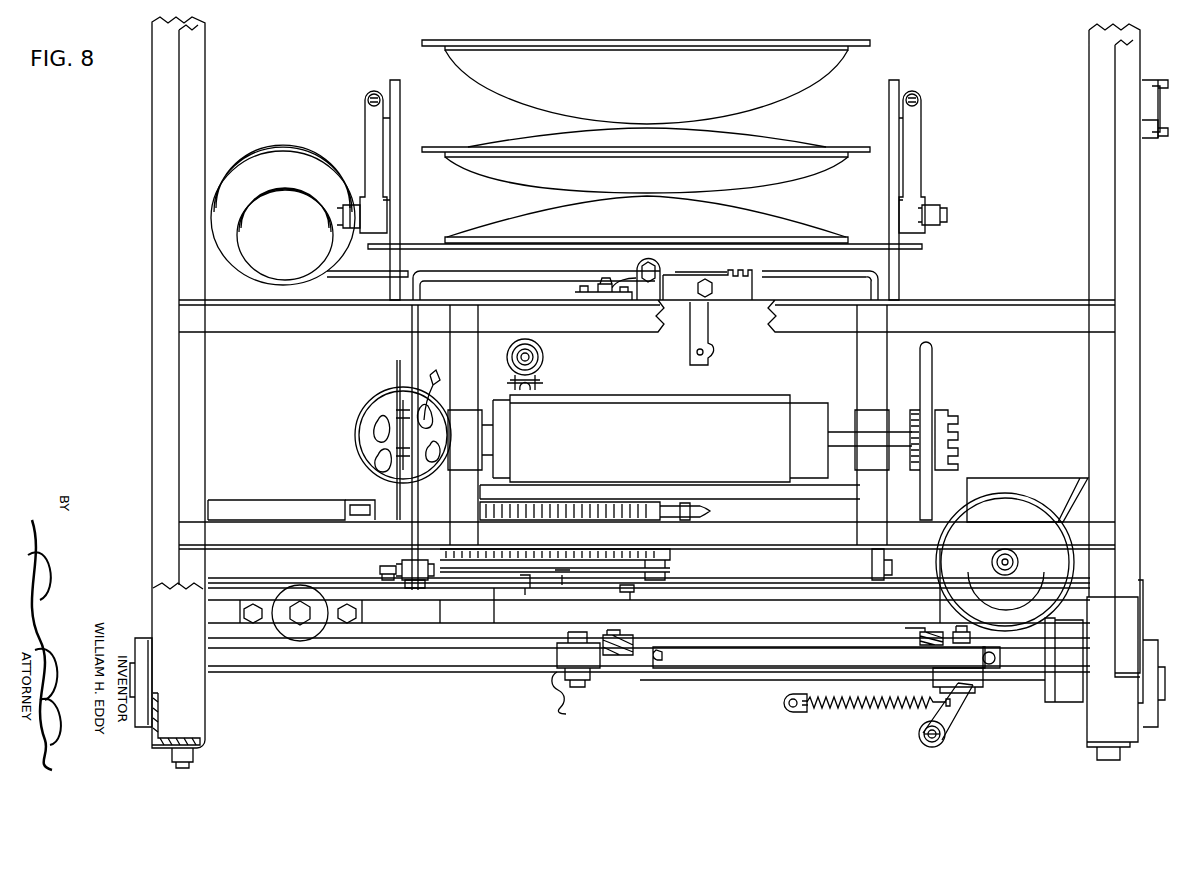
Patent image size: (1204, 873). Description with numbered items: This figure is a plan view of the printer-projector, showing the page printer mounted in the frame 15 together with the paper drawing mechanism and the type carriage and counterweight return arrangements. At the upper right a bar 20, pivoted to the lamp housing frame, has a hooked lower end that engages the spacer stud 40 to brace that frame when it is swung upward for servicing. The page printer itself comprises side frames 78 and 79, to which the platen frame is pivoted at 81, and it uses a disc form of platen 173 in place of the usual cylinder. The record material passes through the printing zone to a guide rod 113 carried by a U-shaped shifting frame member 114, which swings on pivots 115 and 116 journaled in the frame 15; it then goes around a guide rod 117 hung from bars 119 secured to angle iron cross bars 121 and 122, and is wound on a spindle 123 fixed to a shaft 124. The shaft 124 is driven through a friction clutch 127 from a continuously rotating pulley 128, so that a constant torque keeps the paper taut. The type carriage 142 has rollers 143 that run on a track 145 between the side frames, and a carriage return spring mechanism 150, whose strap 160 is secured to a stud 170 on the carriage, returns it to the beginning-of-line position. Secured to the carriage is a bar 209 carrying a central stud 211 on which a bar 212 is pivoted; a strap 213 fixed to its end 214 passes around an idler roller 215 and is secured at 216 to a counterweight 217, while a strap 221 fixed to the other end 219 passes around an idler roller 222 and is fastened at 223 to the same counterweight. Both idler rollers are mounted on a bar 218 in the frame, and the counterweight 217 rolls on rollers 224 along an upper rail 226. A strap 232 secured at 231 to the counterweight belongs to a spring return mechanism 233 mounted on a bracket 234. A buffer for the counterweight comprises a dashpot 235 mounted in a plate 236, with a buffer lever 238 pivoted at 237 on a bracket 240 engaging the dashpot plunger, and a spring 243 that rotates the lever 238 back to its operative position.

The frame 15 is at (213, 111).
The bar 20 is at (1150, 104).
The spacer stud 40 is at (1150, 140).
The side frame 78 is at (375, 136).
The side frame 79 is at (905, 160).
The pivot 81 is at (354, 208).
The guide rod 113 is at (808, 380).
The U-shaped shifting frame member 114 is at (868, 266).
The pivot 115 is at (380, 566).
The pivot 116 is at (890, 574).
The guide rod 117 is at (812, 499).
The bar 119 is at (870, 370).
The angle iron cross bar 121 is at (1005, 333).
The angle iron cross bar 122 is at (1008, 522).
The spindle 123 is at (800, 410).
The shaft 124 is at (842, 435).
The friction clutch 127 is at (954, 410).
The pulley 128 is at (934, 371).
The type carriage 142 is at (668, 562).
The roller 143 is at (344, 498).
The track 145 is at (230, 508).
The carriage return spring mechanism 150 is at (292, 152).
The strap 160 is at (368, 277).
The stud 170 is at (728, 274).
The platen 173 is at (544, 355).
The bar 209 is at (564, 575).
The stud 211 is at (532, 580).
The bar 212 is at (498, 590).
The strap 213 is at (324, 584).
The end of bar 214 is at (418, 590).
The idler roller 215 is at (280, 598).
The securing point 216 is at (625, 631).
The counterweight 217 is at (616, 672).
The bar 218 is at (372, 628).
The end of bar 219 is at (622, 592).
The strap 221 is at (796, 588).
The idler roller 222 is at (998, 635).
The fastening point 223 is at (930, 650).
The roller 224 is at (575, 701).
The upper rail 226 is at (486, 664).
The securing point 231 is at (920, 634).
The strap 232 is at (958, 626).
The spring return mechanism 233 is at (1060, 572).
The bracket 234 is at (1024, 478).
The dashpot 235 is at (1062, 690).
The plate 236 is at (1086, 725).
The pivot 237 is at (924, 742).
The buffer lever 238 is at (955, 708).
The bracket 240 is at (918, 716).
The spring 243 is at (822, 712).